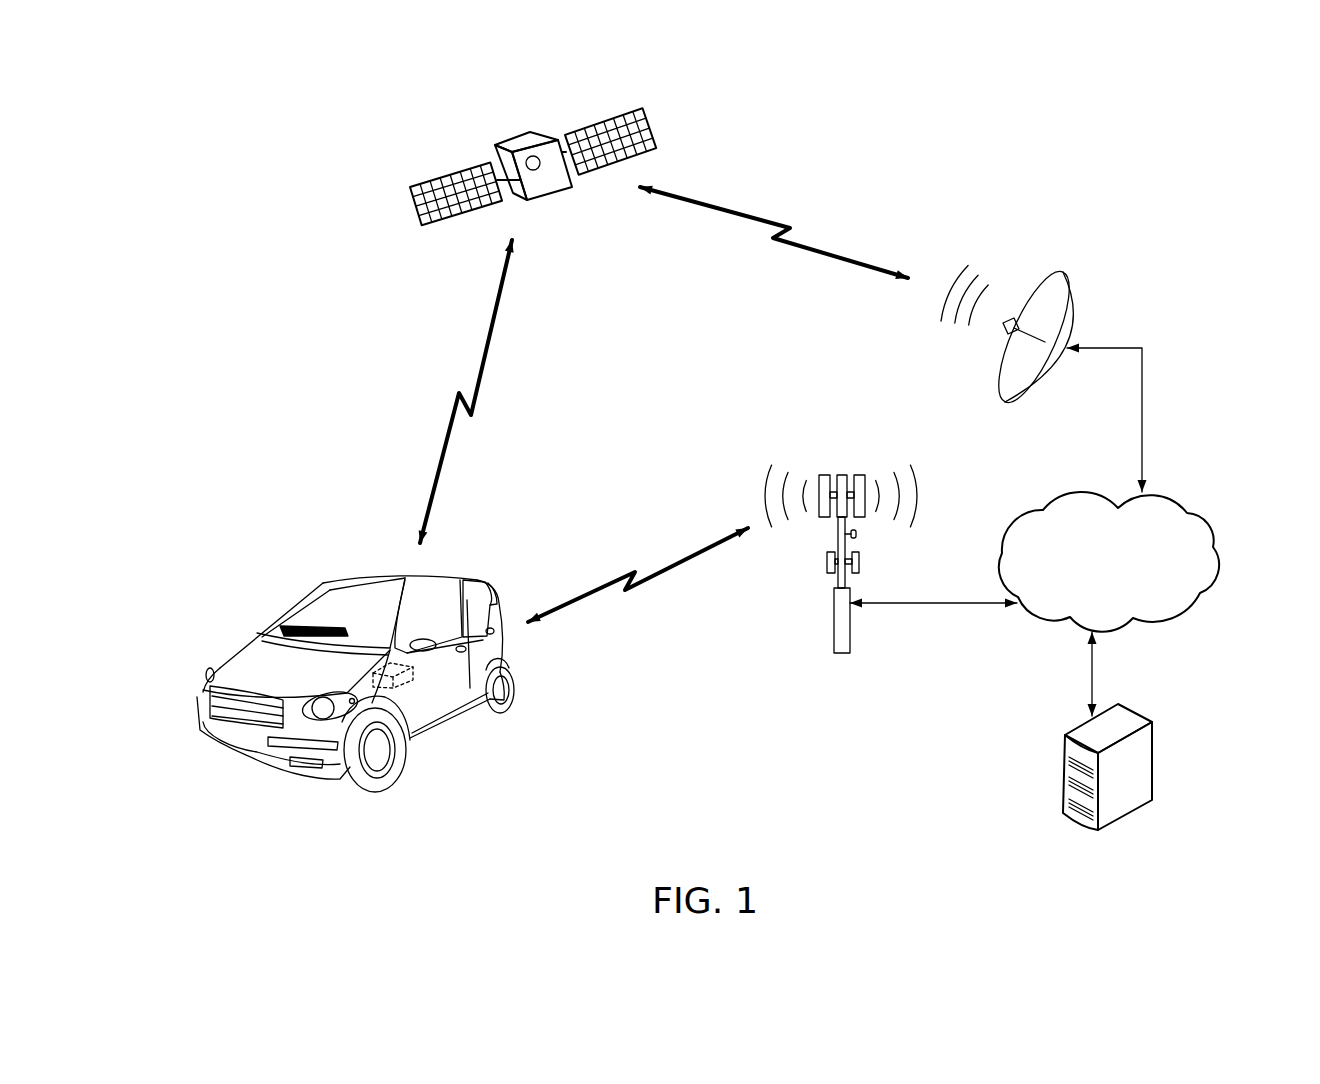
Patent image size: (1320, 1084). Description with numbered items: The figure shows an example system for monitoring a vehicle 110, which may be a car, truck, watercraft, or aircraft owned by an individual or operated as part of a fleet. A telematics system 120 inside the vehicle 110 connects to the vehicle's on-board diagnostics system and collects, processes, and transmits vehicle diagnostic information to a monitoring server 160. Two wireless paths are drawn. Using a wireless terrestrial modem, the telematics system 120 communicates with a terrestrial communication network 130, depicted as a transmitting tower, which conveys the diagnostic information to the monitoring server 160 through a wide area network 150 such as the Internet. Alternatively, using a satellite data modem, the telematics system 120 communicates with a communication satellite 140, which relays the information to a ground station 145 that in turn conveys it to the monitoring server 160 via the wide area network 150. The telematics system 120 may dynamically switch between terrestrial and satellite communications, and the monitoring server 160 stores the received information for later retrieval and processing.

The vehicle 110 is at (337, 592).
The telematics system 120 is at (403, 680).
The terrestrial communication network 130 is at (843, 480).
The communication satellite 140 is at (431, 221).
The ground station 145 is at (1068, 310).
The wide area network 150 is at (1172, 513).
The monitoring server 160 is at (1123, 722).